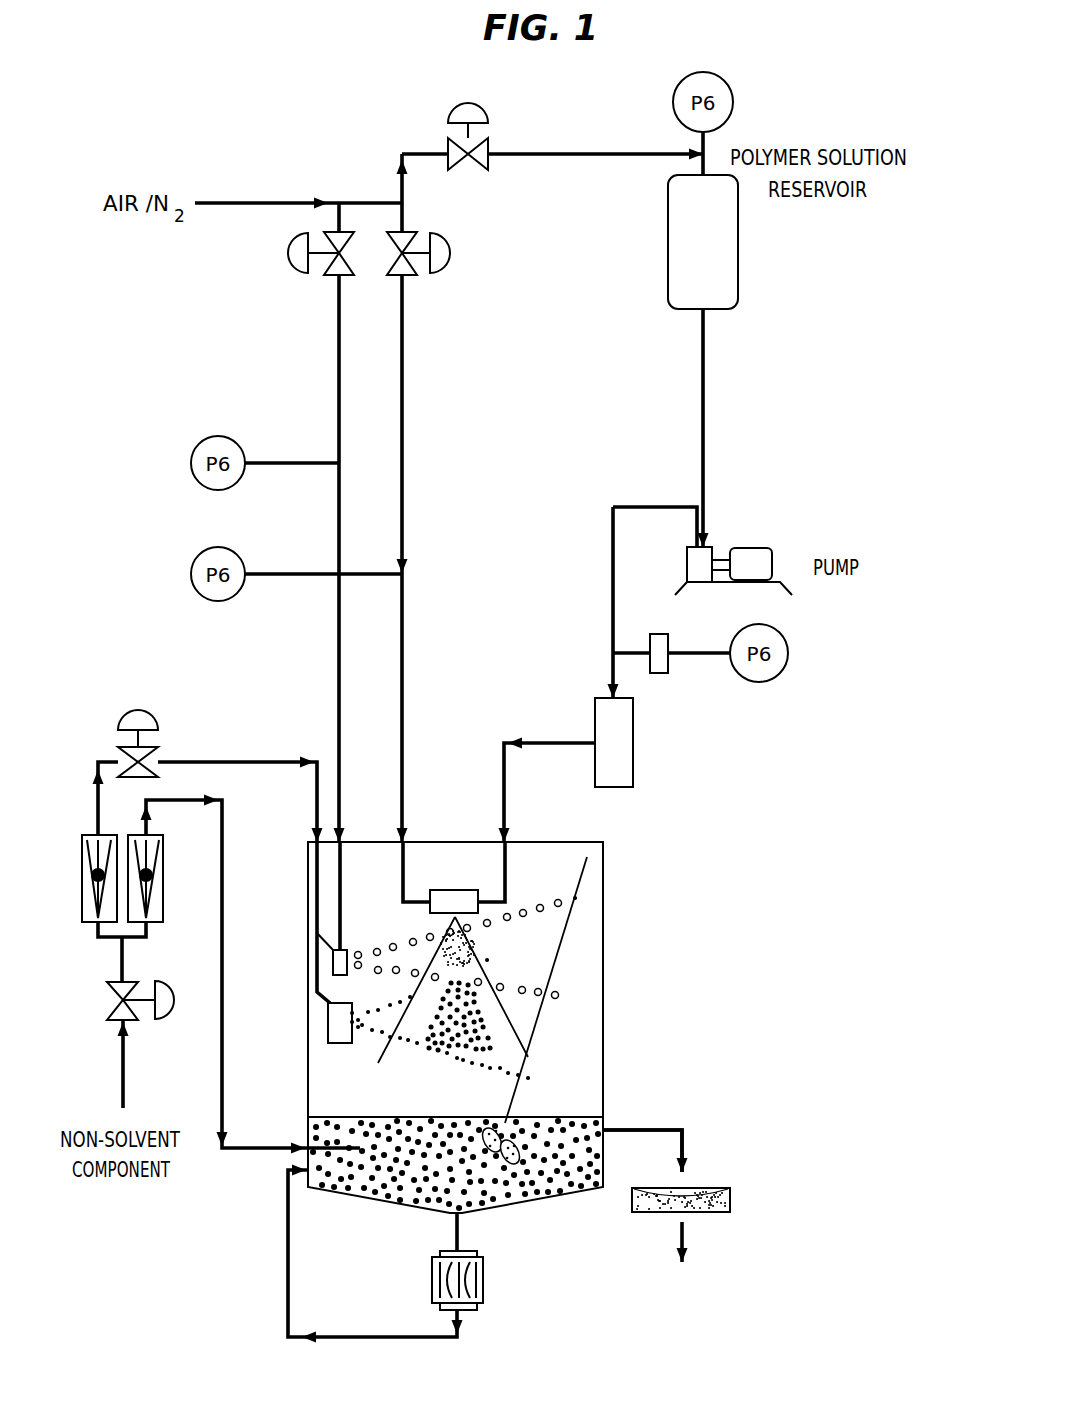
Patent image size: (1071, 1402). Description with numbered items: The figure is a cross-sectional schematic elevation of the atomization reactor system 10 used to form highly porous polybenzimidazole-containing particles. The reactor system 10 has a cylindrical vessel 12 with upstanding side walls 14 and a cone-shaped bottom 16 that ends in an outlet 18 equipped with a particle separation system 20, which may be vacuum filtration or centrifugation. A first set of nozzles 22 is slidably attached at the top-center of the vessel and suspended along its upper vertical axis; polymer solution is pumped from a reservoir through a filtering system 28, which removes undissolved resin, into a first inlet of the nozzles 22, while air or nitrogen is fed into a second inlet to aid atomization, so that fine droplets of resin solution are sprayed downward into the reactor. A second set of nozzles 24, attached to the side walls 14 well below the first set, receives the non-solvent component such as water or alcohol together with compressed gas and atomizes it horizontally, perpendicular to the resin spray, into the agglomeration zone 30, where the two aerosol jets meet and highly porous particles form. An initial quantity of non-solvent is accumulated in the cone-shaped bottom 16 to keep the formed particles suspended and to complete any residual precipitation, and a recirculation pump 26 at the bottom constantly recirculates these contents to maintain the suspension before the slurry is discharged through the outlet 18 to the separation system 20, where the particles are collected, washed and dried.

The reactor system 10 is at (212, 690).
The cylindrical vessel 12 is at (330, 1086).
The upstanding side walls 14 is at (309, 968).
The cone-shaped bottom 16 is at (367, 1202).
The outlet 18 is at (682, 1143).
The particle separation system 20 is at (730, 1200).
The first set of nozzles 22 is at (468, 890).
The second set of nozzles 24 is at (340, 977).
The recirculation pump 26 is at (432, 1275).
The filtering system 28 is at (633, 770).
The agglomeration zone 30 is at (482, 950).